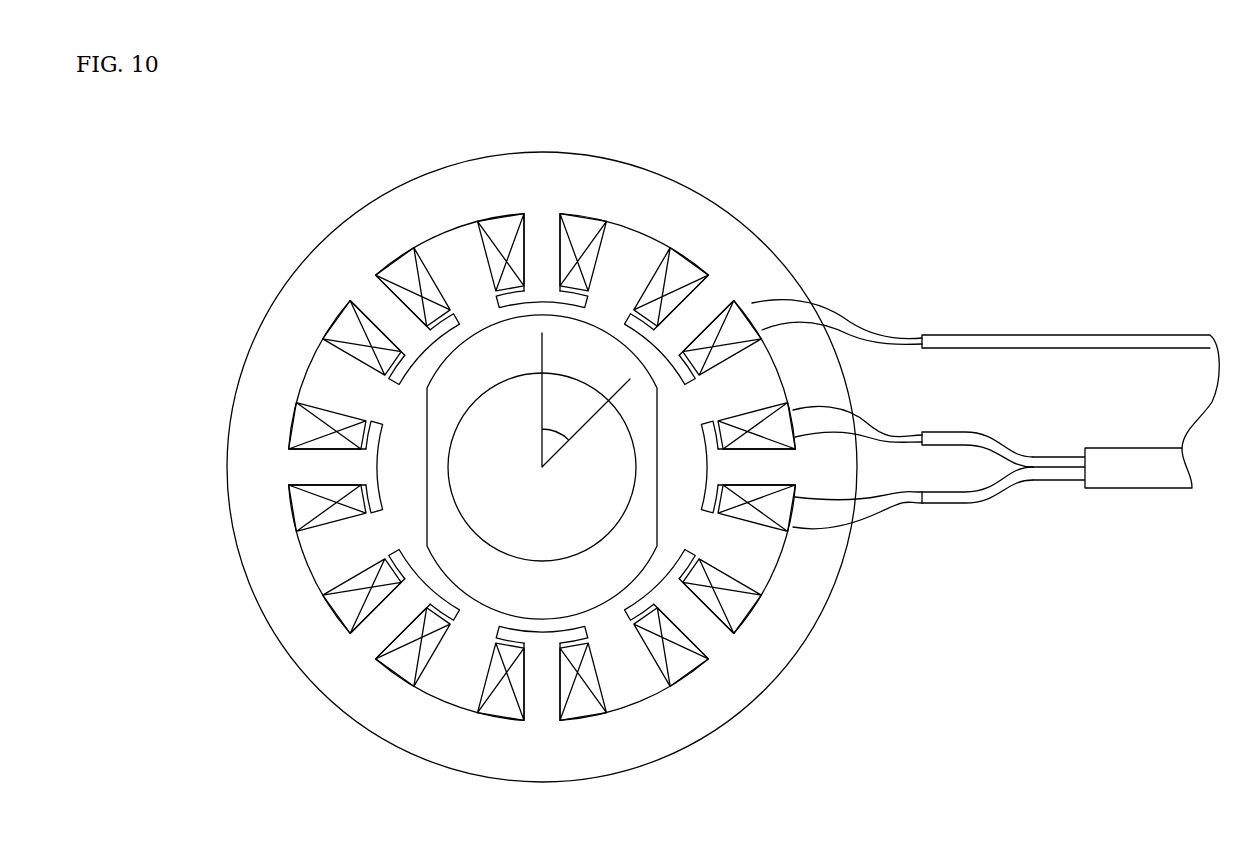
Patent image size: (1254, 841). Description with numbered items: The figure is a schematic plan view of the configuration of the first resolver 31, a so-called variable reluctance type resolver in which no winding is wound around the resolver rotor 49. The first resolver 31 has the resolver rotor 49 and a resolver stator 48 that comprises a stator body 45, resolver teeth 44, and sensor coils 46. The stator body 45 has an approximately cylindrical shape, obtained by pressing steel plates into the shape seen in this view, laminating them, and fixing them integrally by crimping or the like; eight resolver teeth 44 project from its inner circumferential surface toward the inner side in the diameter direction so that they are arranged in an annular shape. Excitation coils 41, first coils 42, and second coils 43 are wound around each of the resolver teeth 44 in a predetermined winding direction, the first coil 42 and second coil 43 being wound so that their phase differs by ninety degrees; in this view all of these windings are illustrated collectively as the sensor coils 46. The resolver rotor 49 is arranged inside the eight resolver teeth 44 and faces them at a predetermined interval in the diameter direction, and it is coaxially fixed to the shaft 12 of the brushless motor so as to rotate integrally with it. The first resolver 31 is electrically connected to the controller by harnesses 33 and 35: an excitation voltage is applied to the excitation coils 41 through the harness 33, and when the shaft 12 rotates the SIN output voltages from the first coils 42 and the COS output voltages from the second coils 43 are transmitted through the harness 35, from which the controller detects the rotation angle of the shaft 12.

The shaft 12 is at (551, 555).
The first resolver 31 is at (902, 127).
The harness 33 is at (1043, 333).
The harness 35 is at (1132, 490).
The excitation coils 41 is at (843, 335).
The first coils 42 is at (880, 437).
The second coils 43 is at (880, 512).
The resolver teeth 44 is at (388, 320).
The stator body 45 is at (378, 193).
The sensor coils 46 is at (650, 290).
The resolver stator 48 is at (221, 663).
The resolver rotor 49 is at (643, 572).